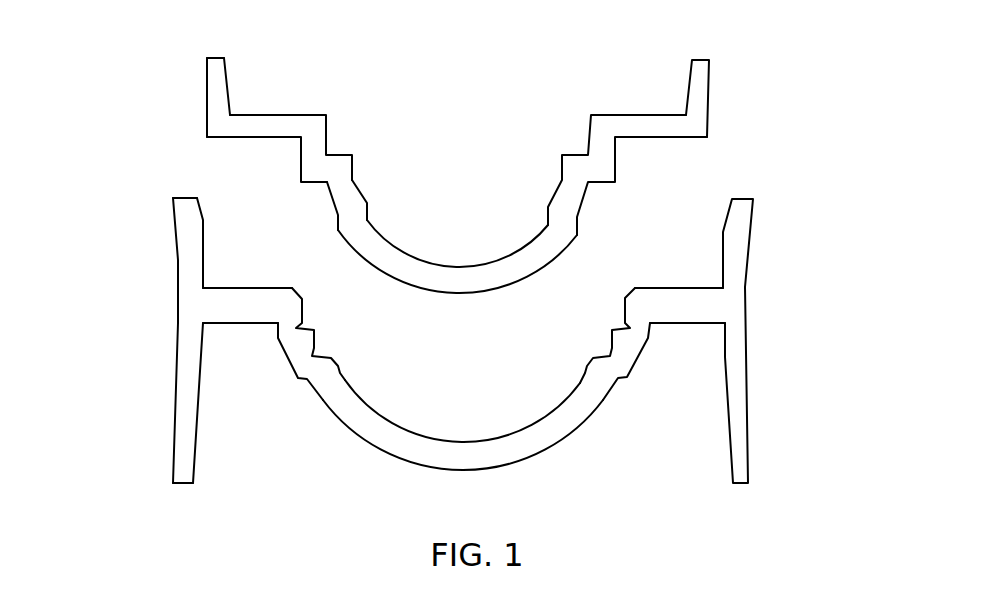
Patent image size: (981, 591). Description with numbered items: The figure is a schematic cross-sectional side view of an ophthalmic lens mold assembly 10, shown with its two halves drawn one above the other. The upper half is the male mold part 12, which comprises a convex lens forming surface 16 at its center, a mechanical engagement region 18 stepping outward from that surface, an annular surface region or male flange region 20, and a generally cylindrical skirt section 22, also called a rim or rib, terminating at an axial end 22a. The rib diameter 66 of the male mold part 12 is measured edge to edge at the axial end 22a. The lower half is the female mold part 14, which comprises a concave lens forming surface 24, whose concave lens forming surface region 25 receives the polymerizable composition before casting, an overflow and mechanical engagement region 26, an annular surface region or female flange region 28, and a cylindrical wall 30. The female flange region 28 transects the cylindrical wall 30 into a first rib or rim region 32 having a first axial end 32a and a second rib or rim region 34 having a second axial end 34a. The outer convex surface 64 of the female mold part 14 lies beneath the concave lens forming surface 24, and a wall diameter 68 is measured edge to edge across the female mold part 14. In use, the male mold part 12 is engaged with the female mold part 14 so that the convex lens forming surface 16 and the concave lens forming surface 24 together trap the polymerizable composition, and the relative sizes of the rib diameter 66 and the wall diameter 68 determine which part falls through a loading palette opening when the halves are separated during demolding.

The ophthalmic lens mold assembly 10 is at (452, 275).
The male mold part 12 is at (459, 178).
The female mold part 14 is at (473, 344).
The convex lens forming surface 16 is at (460, 293).
The mechanical engagement region 18 is at (335, 213).
The male flange region 20 is at (275, 115).
The skirt section 22 is at (207, 76).
The axial end 22a is at (213, 58).
The concave lens forming surface 24 is at (467, 442).
The concave lens forming surface region 25 is at (386, 402).
The overflow and mechanical engagement region 26 is at (606, 353).
The female flange region 28 is at (668, 288).
The cylindrical wall 30 is at (178, 291).
The first rib region 32 is at (176, 403).
The first axial end 32a is at (182, 483).
The second rib region 34 is at (175, 237).
The second axial end 34a is at (184, 198).
The outer convex surface 64 is at (582, 430).
The rib diameter 66 is at (700, 60).
The wall diameter 68 is at (742, 199).